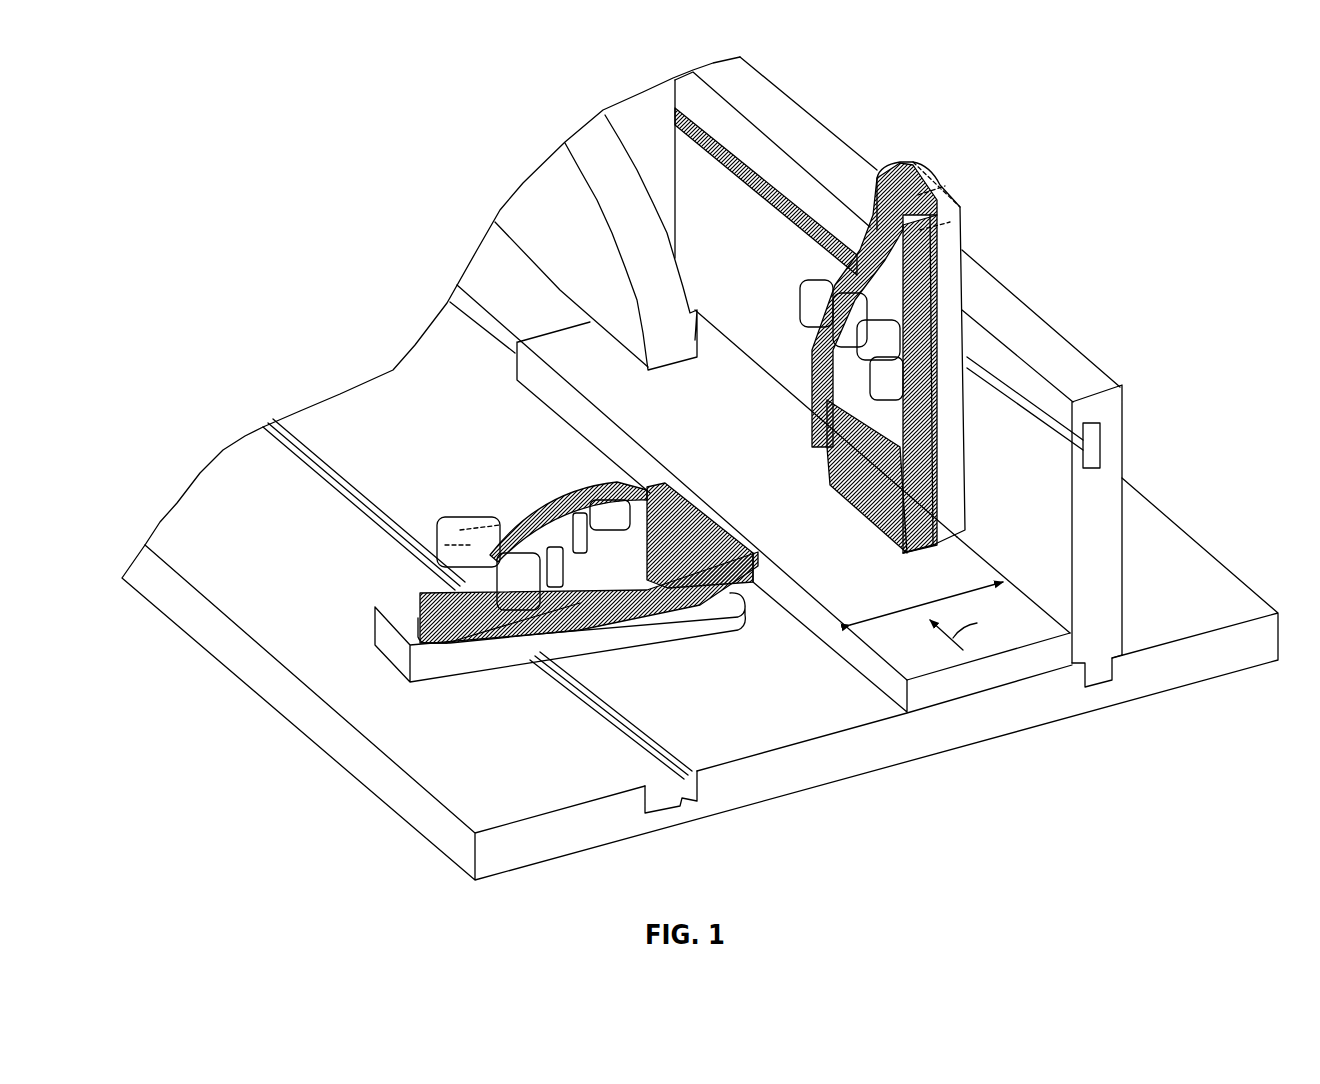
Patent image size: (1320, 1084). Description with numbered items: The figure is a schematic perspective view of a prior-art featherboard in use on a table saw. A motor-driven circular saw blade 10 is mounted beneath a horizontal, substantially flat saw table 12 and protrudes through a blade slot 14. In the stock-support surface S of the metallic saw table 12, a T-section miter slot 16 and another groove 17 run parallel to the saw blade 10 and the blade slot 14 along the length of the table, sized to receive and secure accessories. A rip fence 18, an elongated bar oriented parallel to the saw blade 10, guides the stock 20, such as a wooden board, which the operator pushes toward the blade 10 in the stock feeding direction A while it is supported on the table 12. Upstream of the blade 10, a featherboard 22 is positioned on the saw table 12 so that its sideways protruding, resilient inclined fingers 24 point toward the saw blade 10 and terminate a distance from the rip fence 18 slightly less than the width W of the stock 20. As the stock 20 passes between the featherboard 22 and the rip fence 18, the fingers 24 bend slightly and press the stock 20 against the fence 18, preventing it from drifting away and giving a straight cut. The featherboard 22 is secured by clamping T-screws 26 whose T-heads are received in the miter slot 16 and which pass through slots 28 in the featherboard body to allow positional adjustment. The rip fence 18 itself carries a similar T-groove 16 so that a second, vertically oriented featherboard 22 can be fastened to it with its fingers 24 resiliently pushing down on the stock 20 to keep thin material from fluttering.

The circular saw blade 10 is at (485, 258).
The saw table 12 is at (343, 412).
The blade slot 14 is at (455, 292).
The miter slot 16 is at (1113, 442).
The groove 17 is at (1103, 687).
The rip fence 18 is at (1010, 548).
The stock 20 is at (887, 670).
The featherboard 22 is at (918, 178).
The fingers 24 is at (825, 470).
The clamping T-screws 26 is at (893, 360).
The through slots 28 is at (525, 518).
The width of the stock W is at (920, 605).
The stock feeding direction A is at (993, 625).
The stock-support surface S is at (743, 737).